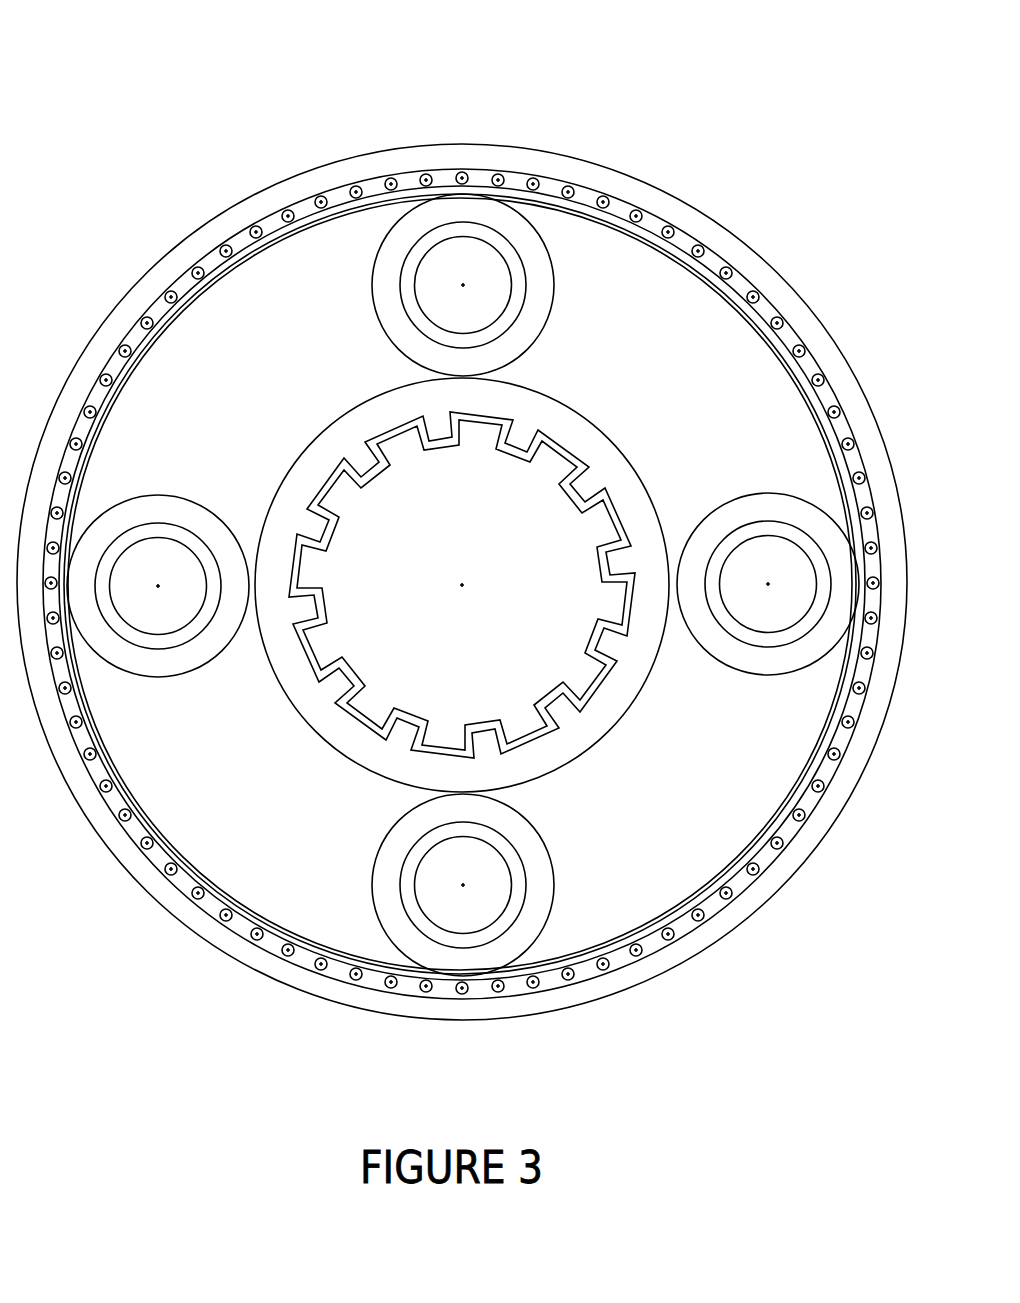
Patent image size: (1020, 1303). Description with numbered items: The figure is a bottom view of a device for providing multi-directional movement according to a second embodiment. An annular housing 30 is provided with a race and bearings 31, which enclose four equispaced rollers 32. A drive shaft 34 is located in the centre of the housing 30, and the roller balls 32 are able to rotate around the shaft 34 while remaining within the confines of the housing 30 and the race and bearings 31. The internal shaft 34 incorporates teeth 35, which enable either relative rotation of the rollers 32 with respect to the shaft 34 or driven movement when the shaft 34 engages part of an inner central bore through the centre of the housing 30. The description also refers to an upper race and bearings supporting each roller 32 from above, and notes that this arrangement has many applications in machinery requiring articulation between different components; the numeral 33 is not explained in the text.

The annular housing 30 is at (758, 253).
The race and bearings 31 is at (613, 963).
The roller 32 is at (476, 945).
The planet gear shaft 33 is at (474, 260).
The drive shaft 34 is at (463, 518).
The teeth 35 is at (347, 458).